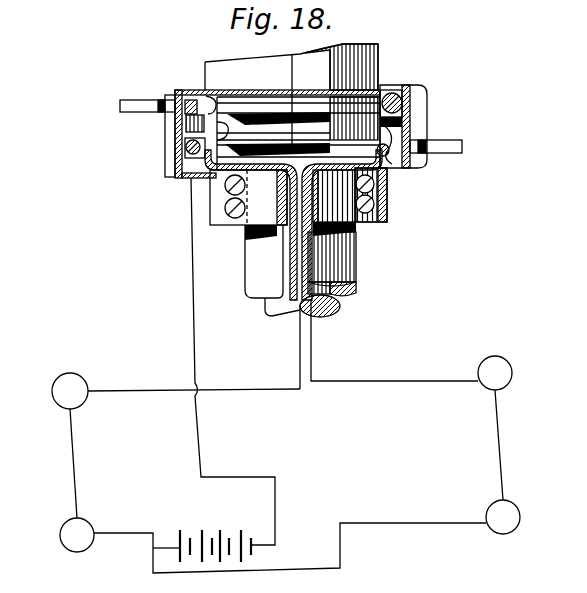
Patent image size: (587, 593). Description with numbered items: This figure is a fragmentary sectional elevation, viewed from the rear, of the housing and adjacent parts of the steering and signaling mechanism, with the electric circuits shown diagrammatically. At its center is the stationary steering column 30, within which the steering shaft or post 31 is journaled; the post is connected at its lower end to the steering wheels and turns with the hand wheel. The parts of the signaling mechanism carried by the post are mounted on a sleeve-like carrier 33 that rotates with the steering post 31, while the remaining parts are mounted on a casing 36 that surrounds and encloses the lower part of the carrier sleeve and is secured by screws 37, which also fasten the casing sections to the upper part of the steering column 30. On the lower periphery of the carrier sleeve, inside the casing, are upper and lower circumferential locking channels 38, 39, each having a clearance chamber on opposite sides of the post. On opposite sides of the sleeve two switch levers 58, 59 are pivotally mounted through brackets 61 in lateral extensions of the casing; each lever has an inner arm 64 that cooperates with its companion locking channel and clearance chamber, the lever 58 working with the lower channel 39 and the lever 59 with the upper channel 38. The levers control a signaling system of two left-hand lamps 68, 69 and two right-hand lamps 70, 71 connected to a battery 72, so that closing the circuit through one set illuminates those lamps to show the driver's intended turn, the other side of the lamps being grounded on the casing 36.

The steering column 30 is at (357, 250).
The steering shaft or post 31 is at (336, 311).
The carrier 33 is at (362, 61).
The casing 36 is at (388, 192).
The screws 37 is at (225, 210).
The upper circumferential locking groove or channel 38 is at (298, 117).
The lower circumferential locking groove or channel 39 is at (293, 221).
The switch lever 58 is at (424, 154).
The switch lever 59 is at (166, 96).
The bracket 61 is at (188, 152).
The inner arm 64 is at (208, 98).
The lamp 68 is at (512, 368).
The lamp 69 is at (526, 514).
The lamp 70 is at (52, 391).
The lamp 71 is at (60, 536).
The battery 72 is at (225, 522).